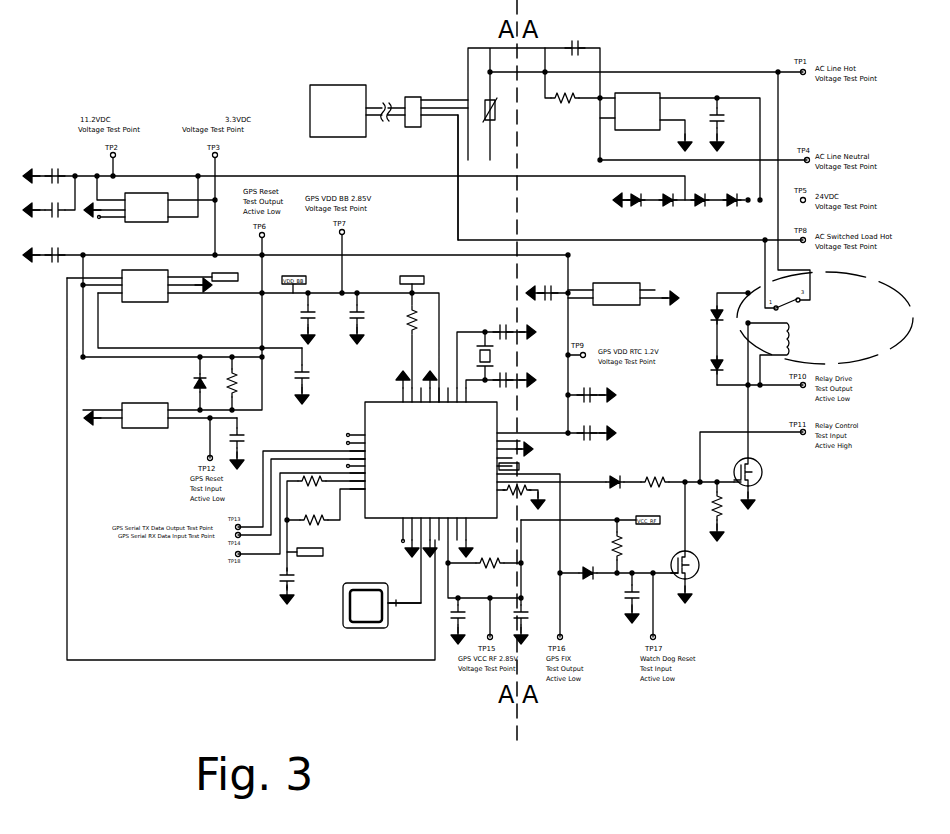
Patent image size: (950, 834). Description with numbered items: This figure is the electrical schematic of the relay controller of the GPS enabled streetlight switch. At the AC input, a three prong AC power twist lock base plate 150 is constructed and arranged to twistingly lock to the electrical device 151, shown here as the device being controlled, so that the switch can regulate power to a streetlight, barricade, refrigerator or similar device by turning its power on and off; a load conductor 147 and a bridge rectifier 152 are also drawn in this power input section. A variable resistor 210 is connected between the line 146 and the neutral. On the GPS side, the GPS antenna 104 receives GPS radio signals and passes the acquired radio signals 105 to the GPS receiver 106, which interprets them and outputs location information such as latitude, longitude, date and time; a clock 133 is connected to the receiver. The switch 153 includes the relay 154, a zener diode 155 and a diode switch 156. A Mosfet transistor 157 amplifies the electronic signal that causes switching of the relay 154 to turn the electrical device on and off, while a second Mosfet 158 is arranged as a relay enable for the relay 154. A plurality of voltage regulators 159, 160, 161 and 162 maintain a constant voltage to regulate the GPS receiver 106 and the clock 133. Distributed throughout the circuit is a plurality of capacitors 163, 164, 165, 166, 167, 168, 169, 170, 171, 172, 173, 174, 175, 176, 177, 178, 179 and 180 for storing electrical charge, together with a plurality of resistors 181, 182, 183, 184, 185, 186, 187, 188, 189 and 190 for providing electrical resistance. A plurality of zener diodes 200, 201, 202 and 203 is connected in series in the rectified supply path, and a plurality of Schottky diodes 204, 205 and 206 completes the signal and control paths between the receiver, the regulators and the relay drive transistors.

The GPS antenna 104 is at (343, 603).
The radio signals 105 is at (424, 590).
The GPS receiver 106 is at (377, 423).
The clock 133 is at (481, 345).
The line 146 is at (433, 98).
The load line 147 is at (447, 122).
The three prong AC power twist lock base plate 150 is at (405, 100).
The electrical device 151 is at (310, 106).
The bridge rectifier BR1 152 is at (640, 93).
The switch 153 is at (858, 284).
The relay 154 is at (808, 340).
The zener diode 155 is at (703, 316).
The diode switch 156 is at (703, 368).
The Mosfet transistor 157 is at (762, 462).
The second Mosfet 158 is at (700, 585).
The voltage regulator 159 is at (600, 283).
The voltage regulator 160 is at (150, 192).
The voltage regulator 161 is at (145, 302).
The voltage regulator 162 is at (143, 425).
The capacitor 163 is at (582, 46).
The capacitor 164 is at (740, 122).
The capacitor 165 is at (548, 288).
The capacitor 166 is at (630, 612).
The capacitor 167 is at (524, 605).
The capacitor 168 is at (456, 630).
The capacitor 169 is at (280, 572).
The capacitor 170 is at (248, 432).
The capacitor 171 is at (296, 386).
The capacitor 172 is at (353, 325).
The capacitor 173 is at (303, 325).
The capacitor 174 is at (600, 392).
The capacitor 175 is at (600, 431).
The capacitor 176 is at (500, 384).
The capacitor 177 is at (500, 326).
The capacitor 178 is at (42, 166).
The capacitor 179 is at (66, 207).
The capacitor 180 is at (65, 254).
The resistor 181 is at (320, 477).
The resistor 182 is at (240, 370).
The resistor 183 is at (408, 332).
The resistor 184 is at (480, 568).
The resistor 185 is at (510, 498).
The resistor 186 is at (728, 520).
The resistor 187 is at (552, 100).
The resistor 188 is at (667, 477).
The resistor 189 is at (612, 538).
The resistor 190 is at (330, 525).
The zener diode 200 is at (626, 190).
The zener diode 201 is at (642, 239).
The zener diode 202 is at (702, 224).
The zener diode 203 is at (738, 224).
The Schottky diode 204 is at (178, 372).
The Schottky diode 205 is at (628, 477).
The Schottky diode 206 is at (587, 571).
The variable resistor 210 is at (488, 100).